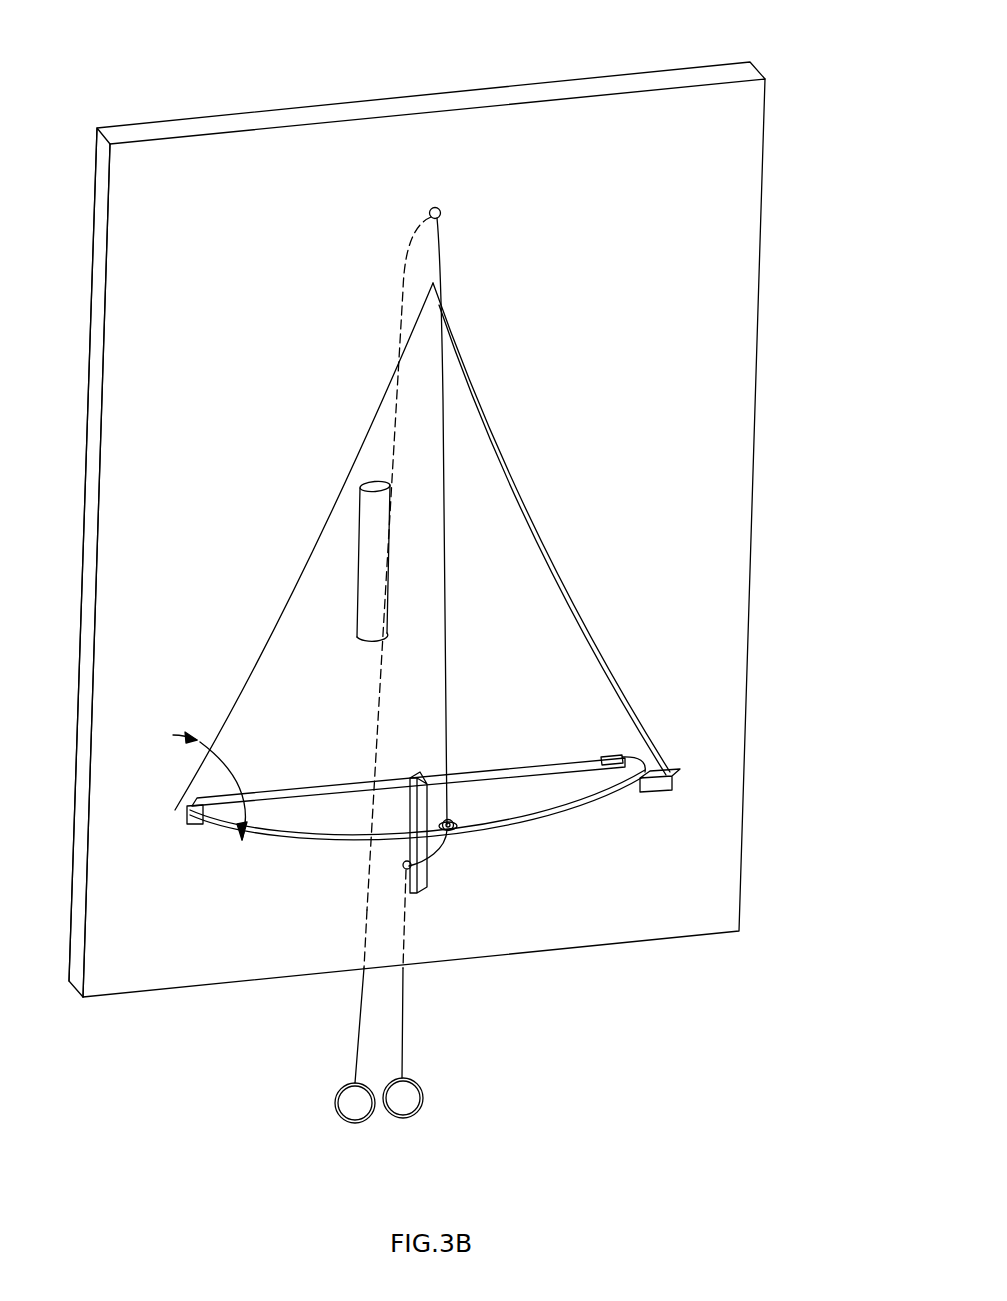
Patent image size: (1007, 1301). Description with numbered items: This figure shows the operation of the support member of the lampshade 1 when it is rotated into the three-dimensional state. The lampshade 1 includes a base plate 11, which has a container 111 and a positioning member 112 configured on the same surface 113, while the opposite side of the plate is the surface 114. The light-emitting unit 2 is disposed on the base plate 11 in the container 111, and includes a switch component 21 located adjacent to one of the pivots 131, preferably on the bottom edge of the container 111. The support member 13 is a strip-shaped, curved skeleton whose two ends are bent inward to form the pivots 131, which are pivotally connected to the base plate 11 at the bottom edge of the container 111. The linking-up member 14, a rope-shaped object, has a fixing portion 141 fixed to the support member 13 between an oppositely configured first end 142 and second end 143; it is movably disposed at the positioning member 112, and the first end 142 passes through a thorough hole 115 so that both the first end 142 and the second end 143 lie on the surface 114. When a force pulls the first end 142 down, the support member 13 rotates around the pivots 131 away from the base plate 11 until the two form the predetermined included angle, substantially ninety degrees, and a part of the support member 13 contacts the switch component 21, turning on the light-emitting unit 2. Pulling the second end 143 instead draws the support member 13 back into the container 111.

The lampshade 1 is at (146, 53).
The base plate 11 is at (660, 78).
The container 111 is at (497, 437).
The positioning member 112 is at (441, 211).
The surface 113 is at (735, 373).
The surface 114 is at (93, 345).
The thorough hole 115 is at (402, 866).
The support member 13 is at (547, 820).
The pivots 131 is at (604, 753).
The linking-up member 14 is at (440, 258).
The fixing portion 141 is at (450, 819).
The first end 142 is at (407, 1053).
The second end 143 is at (357, 1032).
The light-emitting unit 2 is at (372, 521).
The switch component 21 is at (656, 790).